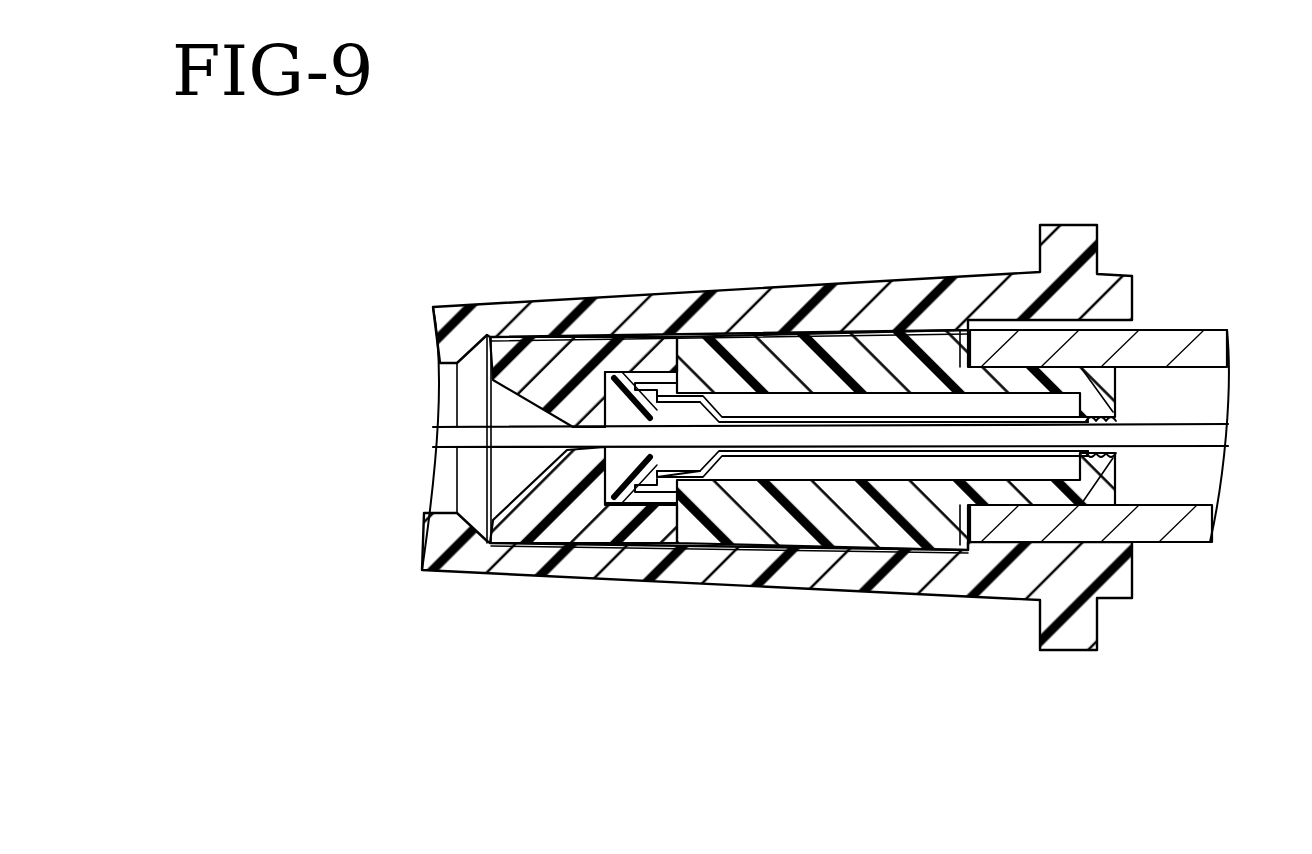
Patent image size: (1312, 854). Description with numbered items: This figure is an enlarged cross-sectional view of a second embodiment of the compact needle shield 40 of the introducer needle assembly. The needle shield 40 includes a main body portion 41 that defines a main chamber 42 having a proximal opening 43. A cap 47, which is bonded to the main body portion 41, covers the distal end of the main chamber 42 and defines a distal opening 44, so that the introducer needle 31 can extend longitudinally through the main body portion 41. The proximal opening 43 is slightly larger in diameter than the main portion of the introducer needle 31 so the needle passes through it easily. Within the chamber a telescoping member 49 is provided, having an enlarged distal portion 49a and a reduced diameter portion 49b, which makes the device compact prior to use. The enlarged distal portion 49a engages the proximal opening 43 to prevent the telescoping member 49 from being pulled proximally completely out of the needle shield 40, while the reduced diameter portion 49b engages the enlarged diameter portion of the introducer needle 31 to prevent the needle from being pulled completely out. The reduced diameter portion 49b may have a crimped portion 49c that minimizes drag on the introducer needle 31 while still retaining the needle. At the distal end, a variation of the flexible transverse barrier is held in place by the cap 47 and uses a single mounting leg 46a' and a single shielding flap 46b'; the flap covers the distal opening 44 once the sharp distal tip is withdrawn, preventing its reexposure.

The introducer needle 31 is at (452, 441).
The needle shield 40 is at (829, 531).
The main body portion 41 is at (932, 523).
The main chamber 42 is at (995, 470).
The proximal opening 43 is at (1106, 420).
The distal opening 44 is at (567, 451).
The mounting leg 46a' is at (598, 336).
The shielding flap 46b' is at (662, 369).
The cap 47 is at (514, 528).
The telescoping member 49 is at (878, 418).
The enlarged distal portion 49a is at (722, 456).
The reduced diameter portion 49b is at (1105, 416).
The crimped portion 49c is at (1113, 458).